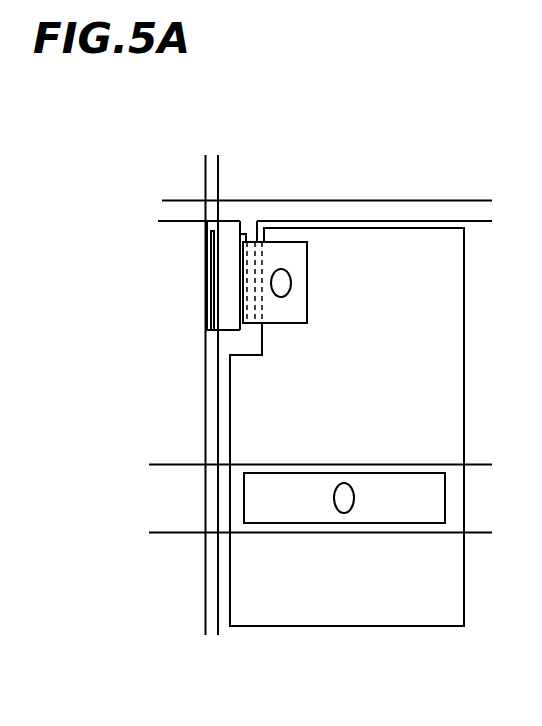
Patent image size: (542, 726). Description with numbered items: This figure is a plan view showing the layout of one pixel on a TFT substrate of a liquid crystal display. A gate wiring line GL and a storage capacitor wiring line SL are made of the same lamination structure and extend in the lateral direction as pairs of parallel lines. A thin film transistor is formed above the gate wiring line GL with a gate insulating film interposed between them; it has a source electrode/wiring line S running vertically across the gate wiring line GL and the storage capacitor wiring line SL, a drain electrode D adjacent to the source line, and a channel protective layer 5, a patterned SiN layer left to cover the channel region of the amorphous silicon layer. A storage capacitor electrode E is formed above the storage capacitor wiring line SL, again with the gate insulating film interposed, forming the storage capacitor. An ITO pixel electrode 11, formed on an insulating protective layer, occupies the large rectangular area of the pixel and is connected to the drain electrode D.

The source electrode/wiring line S is at (211, 153).
The gate wiring line GL is at (433, 207).
The channel protective layer 5 is at (227, 335).
The drain electrode D is at (275, 250).
The ITO pixel electrode 11 is at (450, 273).
The storage capacitor wiring line SL is at (484, 520).
The storage capacitor electrode E is at (407, 508).